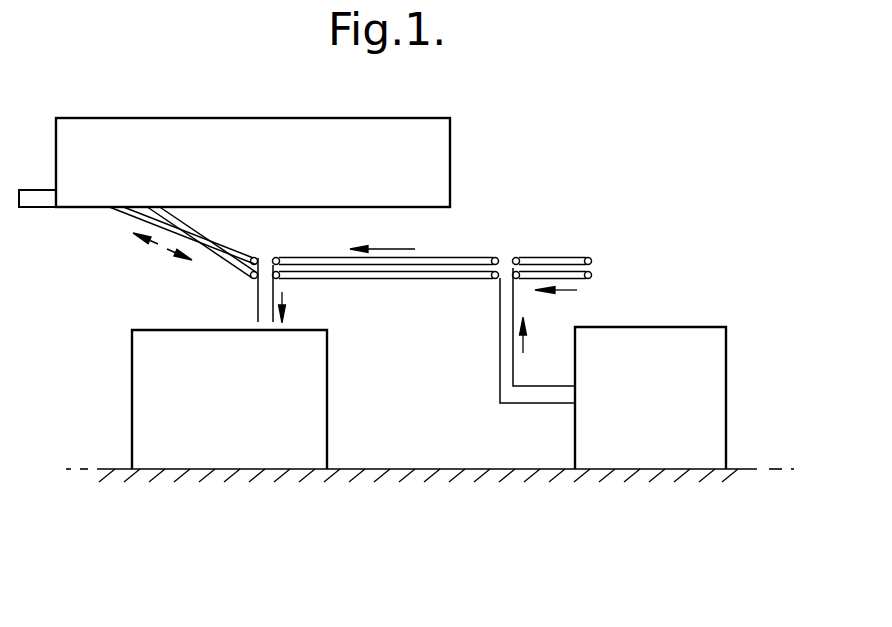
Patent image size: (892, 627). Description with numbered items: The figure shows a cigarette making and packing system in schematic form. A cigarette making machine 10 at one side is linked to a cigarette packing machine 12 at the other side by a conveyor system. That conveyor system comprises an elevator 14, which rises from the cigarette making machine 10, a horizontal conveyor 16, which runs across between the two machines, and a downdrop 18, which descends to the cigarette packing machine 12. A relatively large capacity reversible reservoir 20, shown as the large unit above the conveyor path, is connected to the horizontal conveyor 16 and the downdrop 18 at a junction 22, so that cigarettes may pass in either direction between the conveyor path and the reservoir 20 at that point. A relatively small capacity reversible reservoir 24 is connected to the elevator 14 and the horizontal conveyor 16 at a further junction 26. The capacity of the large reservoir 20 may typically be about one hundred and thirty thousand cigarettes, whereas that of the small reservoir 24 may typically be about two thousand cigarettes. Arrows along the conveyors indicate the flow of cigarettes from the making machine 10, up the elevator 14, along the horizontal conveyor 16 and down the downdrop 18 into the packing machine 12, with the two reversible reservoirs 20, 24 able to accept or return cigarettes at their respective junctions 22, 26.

The cigarette making machine 10 is at (723, 347).
The cigarette packing machine 12 is at (131, 352).
The elevator 14 is at (500, 323).
The horizontal conveyor 16 is at (445, 255).
The downdrop 18 is at (258, 300).
The reversible reservoir 20 is at (408, 128).
The junction 22 is at (272, 244).
The reversible reservoir 24 is at (582, 255).
The further junction 26 is at (507, 242).